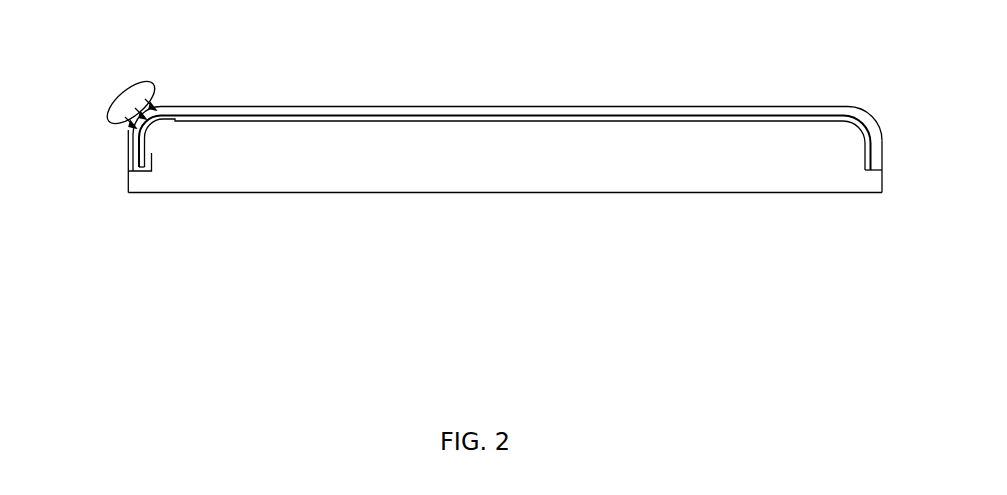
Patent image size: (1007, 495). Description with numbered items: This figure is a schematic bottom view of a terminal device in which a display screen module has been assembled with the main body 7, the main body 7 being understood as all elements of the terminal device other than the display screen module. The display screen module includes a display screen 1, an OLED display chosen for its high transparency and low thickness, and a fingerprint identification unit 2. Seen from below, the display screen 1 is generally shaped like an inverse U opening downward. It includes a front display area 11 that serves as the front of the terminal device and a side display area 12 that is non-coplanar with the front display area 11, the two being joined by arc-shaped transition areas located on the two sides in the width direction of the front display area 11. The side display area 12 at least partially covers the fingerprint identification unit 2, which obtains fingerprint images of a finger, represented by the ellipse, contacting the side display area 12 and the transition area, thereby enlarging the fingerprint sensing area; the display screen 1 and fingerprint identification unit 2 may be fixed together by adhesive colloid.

The display screen 1 is at (614, 93).
The front display area 11 is at (436, 106).
The side display area 12 is at (128, 157).
The fingerprint identification unit 2 is at (147, 155).
The main body 7 is at (456, 168).